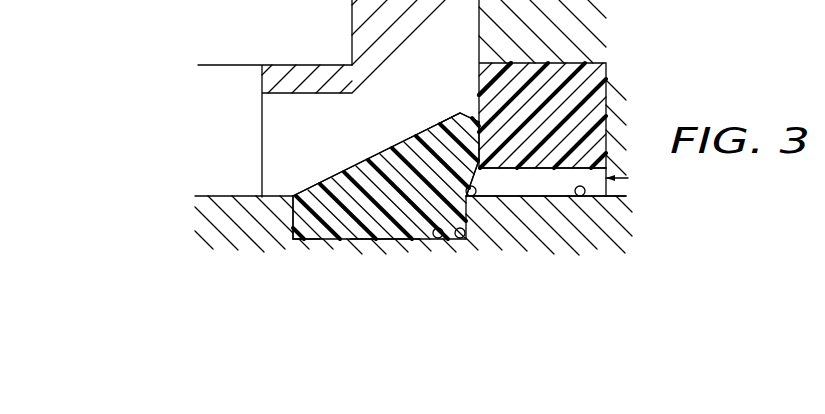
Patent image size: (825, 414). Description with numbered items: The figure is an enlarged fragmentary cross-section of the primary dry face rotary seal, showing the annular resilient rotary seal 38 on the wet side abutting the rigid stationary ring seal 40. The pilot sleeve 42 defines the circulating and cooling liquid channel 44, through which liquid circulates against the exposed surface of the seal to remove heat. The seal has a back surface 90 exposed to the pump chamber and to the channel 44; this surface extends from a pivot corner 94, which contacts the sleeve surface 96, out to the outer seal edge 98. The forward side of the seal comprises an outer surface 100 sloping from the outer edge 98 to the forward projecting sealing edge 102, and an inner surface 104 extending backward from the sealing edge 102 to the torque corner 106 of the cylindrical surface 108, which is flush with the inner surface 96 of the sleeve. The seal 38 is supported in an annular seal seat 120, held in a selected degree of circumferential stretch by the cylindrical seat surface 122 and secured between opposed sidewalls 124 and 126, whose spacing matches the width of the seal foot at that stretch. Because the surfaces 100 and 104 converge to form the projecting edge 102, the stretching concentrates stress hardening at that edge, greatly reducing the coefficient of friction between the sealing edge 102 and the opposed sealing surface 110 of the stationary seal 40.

The dry face rotary resilient seal 38 is at (362, 150).
The rigid stationary ring seal 40 is at (604, 56).
The pilot sleeve 42 is at (262, 88).
The circulating and cooling liquid channel 44 is at (276, 140).
The back surface 90 is at (416, 138).
The pivot corner 94 is at (294, 196).
The sleeve surface 96 is at (262, 197).
The outer seal edge 98 is at (464, 128).
The outer surface 100 is at (471, 136).
The forward projecting sealing edge 102 is at (486, 103).
The inner surface 104 is at (480, 174).
The torque corner 106 is at (446, 190).
The cylindrical surface 108 is at (479, 198).
The sealing surface 110 is at (550, 63).
The seal seat 120 is at (388, 234).
The cylindrical surface of seat 122 is at (445, 240).
The sidewall 124 is at (298, 241).
The sidewall 126 is at (467, 241).